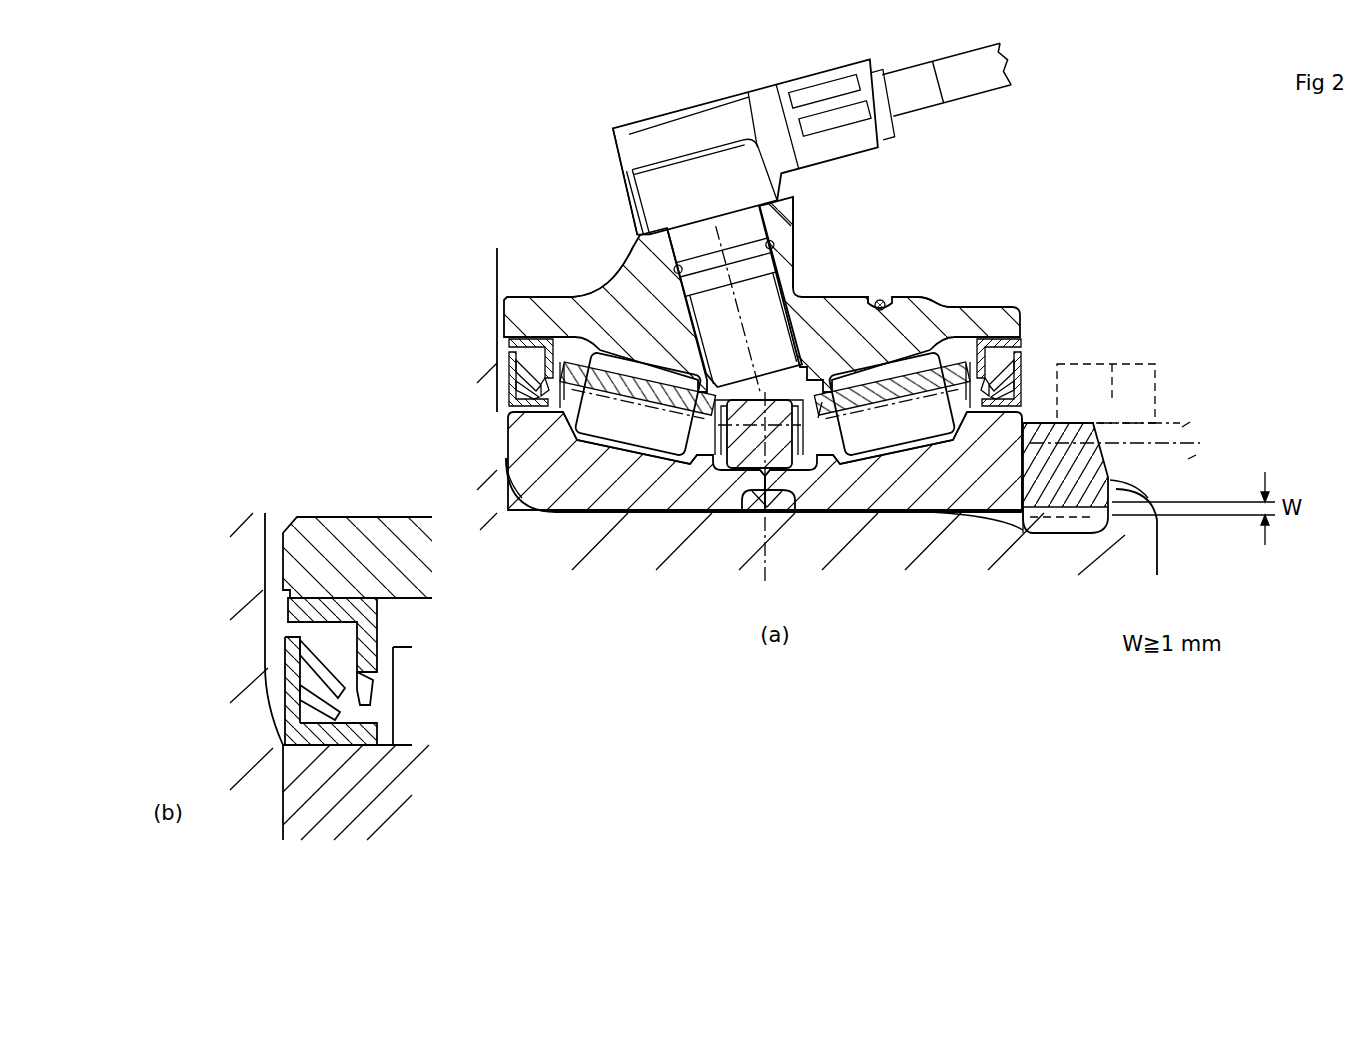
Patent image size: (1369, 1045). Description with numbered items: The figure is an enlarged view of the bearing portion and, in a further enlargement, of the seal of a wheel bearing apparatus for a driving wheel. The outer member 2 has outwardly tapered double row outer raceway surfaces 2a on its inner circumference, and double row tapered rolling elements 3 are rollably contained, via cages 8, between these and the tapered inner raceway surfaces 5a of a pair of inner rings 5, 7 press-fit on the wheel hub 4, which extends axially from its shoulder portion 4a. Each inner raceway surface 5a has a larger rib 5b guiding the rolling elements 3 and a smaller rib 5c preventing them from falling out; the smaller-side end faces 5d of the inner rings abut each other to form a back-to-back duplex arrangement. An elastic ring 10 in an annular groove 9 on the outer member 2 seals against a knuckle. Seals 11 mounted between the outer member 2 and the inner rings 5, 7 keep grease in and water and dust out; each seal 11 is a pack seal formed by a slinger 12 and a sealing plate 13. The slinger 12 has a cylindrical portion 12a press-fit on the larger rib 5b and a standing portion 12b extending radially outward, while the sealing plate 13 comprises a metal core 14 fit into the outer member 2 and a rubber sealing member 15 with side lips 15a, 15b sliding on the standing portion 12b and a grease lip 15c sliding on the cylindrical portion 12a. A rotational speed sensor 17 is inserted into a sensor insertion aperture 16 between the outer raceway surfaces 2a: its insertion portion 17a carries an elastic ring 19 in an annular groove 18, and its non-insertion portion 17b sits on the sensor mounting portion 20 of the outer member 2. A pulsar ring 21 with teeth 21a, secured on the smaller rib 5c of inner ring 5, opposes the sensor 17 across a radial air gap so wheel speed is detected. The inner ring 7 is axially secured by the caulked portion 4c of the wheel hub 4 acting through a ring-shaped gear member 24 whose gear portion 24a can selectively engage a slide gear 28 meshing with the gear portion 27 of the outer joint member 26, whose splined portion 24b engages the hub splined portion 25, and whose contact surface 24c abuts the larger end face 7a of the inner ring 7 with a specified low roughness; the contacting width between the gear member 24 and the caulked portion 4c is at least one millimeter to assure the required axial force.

The outer member 2 is at (846, 300).
The outer raceway surfaces 2a is at (598, 300).
The rolling elements 3 is at (630, 445).
The wheel hub 4 is at (503, 518).
The shoulder portion 4a is at (505, 460).
The caulked portion 4c is at (1137, 542).
The outer-side inner ring 5 is at (714, 490).
The inner raceway surface 5a is at (607, 440).
The larger rib 5b is at (566, 426).
The smaller rib 5c is at (688, 466).
The inner ring end face 5d is at (742, 515).
The inner-side inner ring 7 is at (912, 490).
The larger end face 7a is at (1036, 447).
The cages 8 is at (652, 380).
The annular groove 9 is at (826, 424).
The elastic ring 10 is at (883, 299).
The seal 11 is at (496, 355).
The slinger 12 is at (244, 691).
The cylindrical portion 12a is at (295, 720).
The standing portion 12b is at (297, 670).
The sealing plate 13 is at (433, 656).
The metal core 14 is at (377, 592).
The sealing member 15 is at (412, 673).
The side lip 15a is at (300, 640).
The side lip 15b is at (335, 682).
The grease lip 15c is at (368, 697).
The sensor insertion aperture 16 is at (692, 294).
The rotational speed sensor 17 is at (784, 216).
The insertion portion 17a is at (776, 300).
The non-insertion portion 17b is at (694, 172).
The annular groove 18 is at (670, 264).
The elastic ring 19 is at (790, 226).
The sensor mounting portion 20 is at (643, 212).
The pulsar ring 21 is at (792, 398).
The teeth 21a is at (750, 412).
The gear member 24 is at (1117, 473).
The gear portion 24a is at (1068, 430).
The splined portion 24b is at (1126, 512).
The contact surface 24c is at (1003, 510).
The hub splined portion 25 is at (1010, 540).
The outer joint member 26 is at (1195, 455).
The gear portion 27 is at (1188, 422).
The slide gear 28 is at (1117, 362).